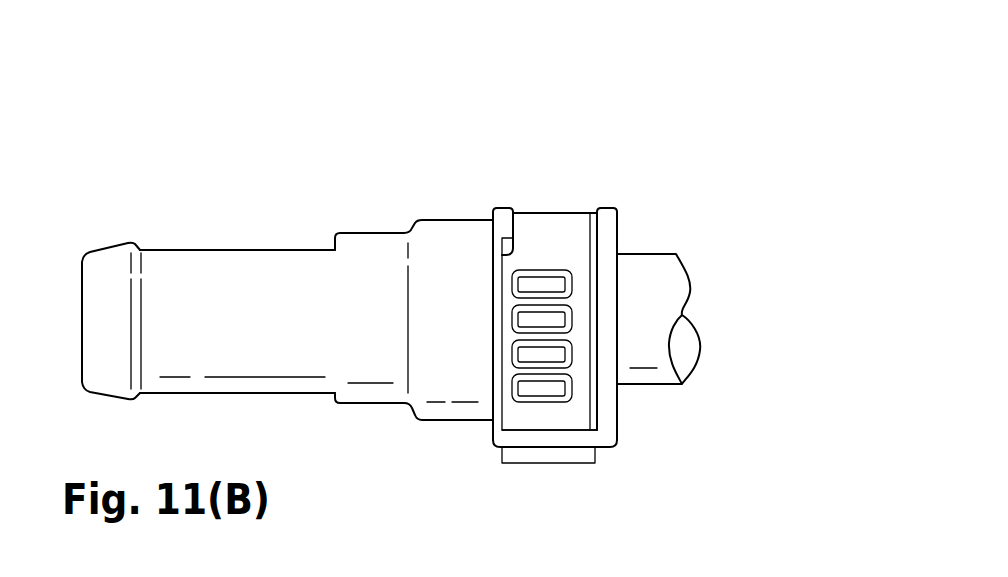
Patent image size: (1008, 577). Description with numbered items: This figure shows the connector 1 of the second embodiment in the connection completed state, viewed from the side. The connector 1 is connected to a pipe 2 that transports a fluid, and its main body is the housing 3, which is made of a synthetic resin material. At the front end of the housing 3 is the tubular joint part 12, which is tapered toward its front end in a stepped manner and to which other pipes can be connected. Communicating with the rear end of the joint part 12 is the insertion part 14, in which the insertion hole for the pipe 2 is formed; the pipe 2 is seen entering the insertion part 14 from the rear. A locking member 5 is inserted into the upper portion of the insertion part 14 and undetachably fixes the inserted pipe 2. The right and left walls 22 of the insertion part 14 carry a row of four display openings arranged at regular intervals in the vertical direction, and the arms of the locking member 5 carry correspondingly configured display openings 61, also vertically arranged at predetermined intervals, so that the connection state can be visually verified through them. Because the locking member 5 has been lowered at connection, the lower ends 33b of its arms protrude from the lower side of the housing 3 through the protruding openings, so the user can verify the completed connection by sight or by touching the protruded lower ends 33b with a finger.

The connector 1 is at (208, 190).
The pipe 2 is at (650, 248).
The housing 3 is at (385, 72).
The locking member 5 is at (555, 211).
The joint part 12 is at (293, 257).
The insertion part 14 is at (617, 207).
The right and left walls 22 is at (582, 424).
The lower ends 33b is at (527, 463).
The display openings 61 is at (534, 296).